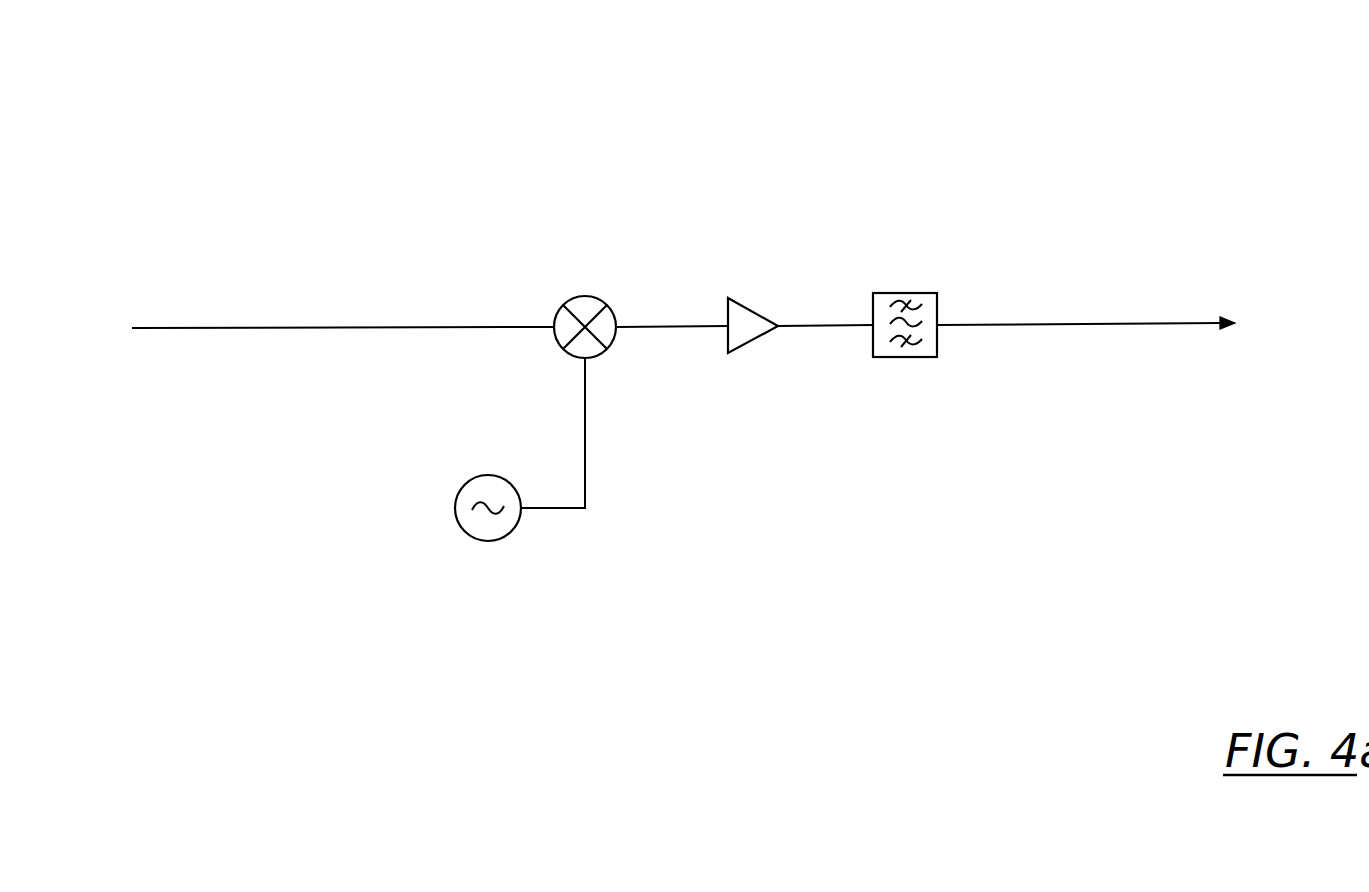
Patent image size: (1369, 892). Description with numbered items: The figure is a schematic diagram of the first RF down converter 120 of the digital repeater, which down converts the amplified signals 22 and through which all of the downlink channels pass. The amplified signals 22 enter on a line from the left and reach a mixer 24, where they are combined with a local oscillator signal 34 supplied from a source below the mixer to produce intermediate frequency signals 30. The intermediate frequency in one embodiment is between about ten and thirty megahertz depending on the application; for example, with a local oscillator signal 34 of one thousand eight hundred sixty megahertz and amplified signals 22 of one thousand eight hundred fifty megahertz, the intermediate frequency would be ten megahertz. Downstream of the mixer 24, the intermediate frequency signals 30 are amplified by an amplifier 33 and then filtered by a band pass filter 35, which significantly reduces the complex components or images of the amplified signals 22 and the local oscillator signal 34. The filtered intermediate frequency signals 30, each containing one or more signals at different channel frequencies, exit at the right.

The first RF down converter 120 is at (1072, 123).
The amplified signals 22 is at (301, 327).
The mixer 24 is at (590, 296).
The intermediate frequency signals 30 is at (678, 327).
The amplifier 33 is at (752, 310).
The local oscillator signal 34 is at (584, 458).
The band pass filter 35 is at (912, 295).